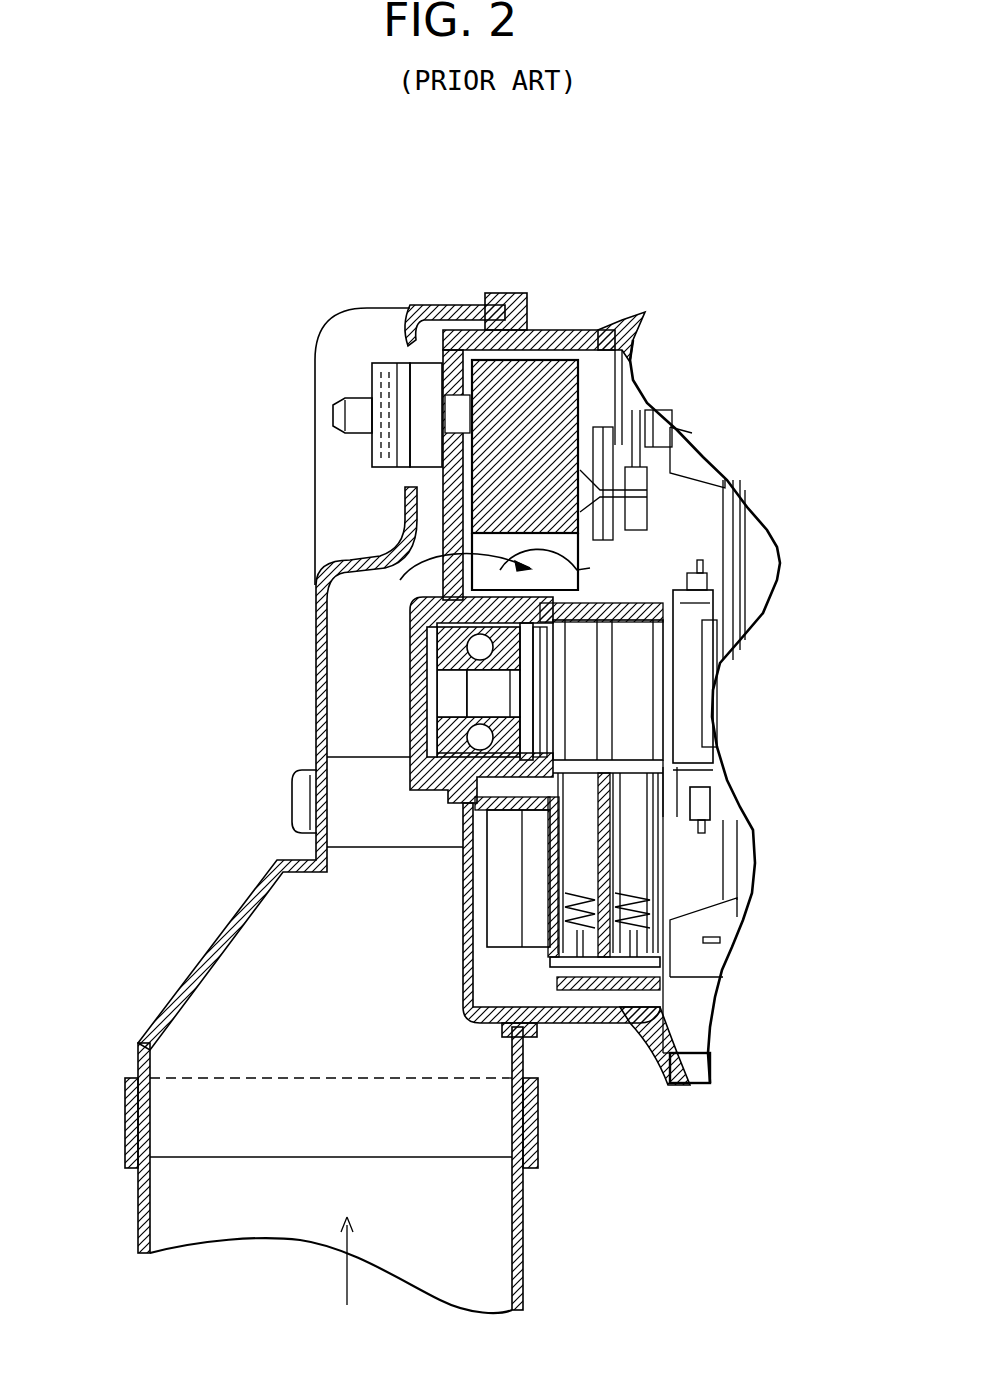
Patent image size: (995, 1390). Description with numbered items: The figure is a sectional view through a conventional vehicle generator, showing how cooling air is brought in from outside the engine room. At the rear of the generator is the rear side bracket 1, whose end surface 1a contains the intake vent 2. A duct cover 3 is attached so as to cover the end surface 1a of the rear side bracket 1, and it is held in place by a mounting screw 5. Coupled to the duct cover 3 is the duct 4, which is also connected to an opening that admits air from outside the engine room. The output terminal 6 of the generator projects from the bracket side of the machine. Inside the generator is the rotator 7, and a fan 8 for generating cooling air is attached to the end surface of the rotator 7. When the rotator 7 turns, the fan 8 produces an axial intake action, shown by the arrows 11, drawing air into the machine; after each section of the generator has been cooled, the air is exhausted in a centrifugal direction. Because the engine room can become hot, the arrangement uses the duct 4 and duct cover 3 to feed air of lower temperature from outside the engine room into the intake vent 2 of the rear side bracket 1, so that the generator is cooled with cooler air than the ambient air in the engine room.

The rear side bracket 1 is at (558, 327).
The end surface 1a is at (438, 377).
The intake vent 2 is at (453, 508).
The duct cover 3 is at (315, 638).
The duct 4 is at (138, 1223).
The mounting screw 5 is at (297, 793).
The output terminal 6 is at (340, 417).
The rotator 7 is at (773, 578).
The fan 8 is at (693, 460).
The arrows 11 is at (393, 877).